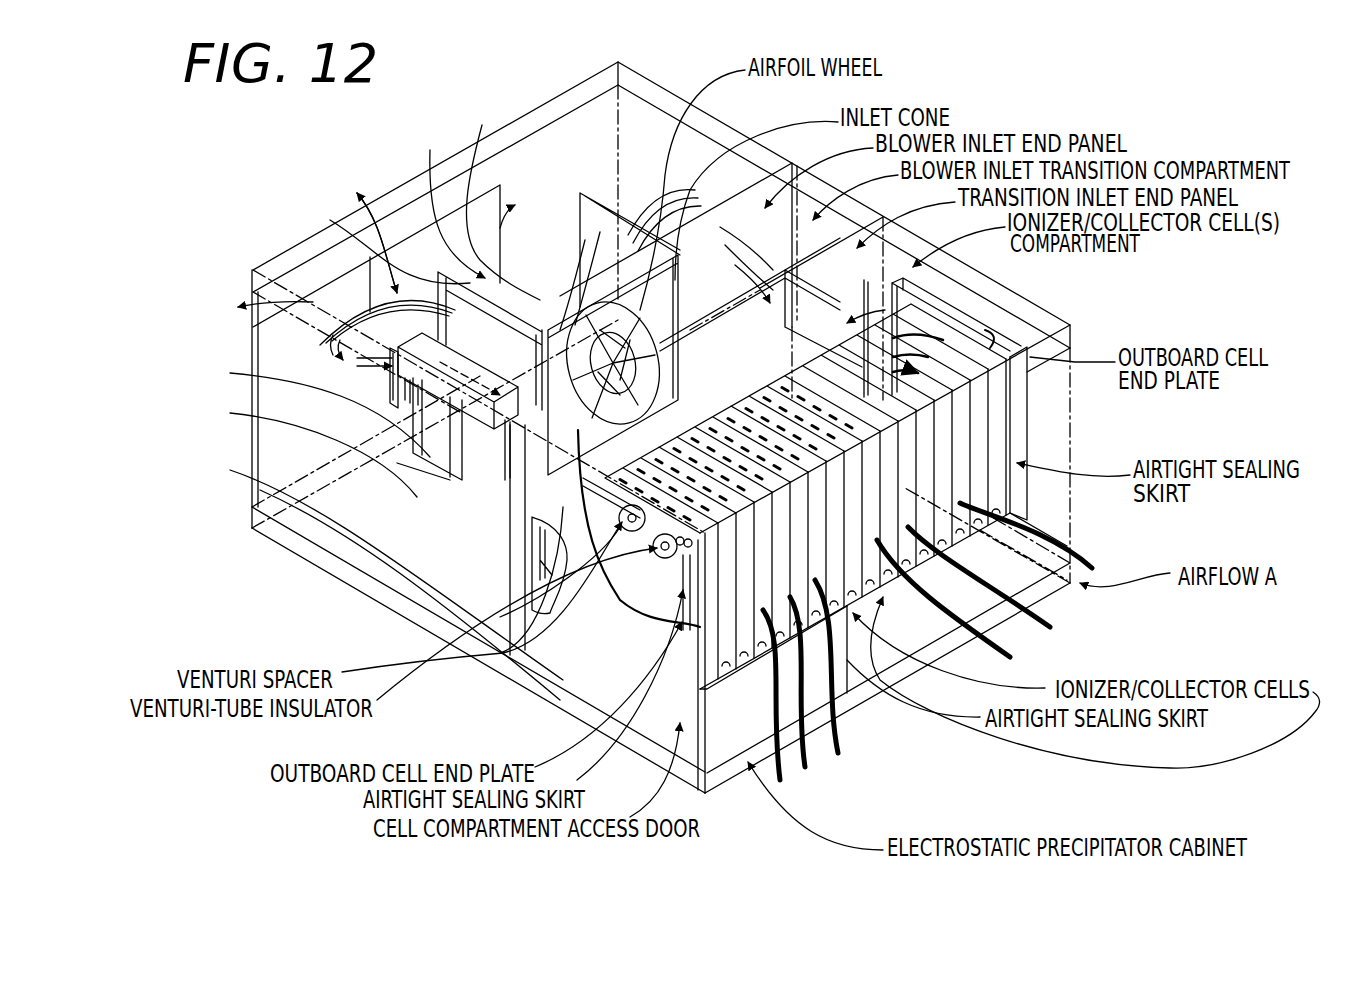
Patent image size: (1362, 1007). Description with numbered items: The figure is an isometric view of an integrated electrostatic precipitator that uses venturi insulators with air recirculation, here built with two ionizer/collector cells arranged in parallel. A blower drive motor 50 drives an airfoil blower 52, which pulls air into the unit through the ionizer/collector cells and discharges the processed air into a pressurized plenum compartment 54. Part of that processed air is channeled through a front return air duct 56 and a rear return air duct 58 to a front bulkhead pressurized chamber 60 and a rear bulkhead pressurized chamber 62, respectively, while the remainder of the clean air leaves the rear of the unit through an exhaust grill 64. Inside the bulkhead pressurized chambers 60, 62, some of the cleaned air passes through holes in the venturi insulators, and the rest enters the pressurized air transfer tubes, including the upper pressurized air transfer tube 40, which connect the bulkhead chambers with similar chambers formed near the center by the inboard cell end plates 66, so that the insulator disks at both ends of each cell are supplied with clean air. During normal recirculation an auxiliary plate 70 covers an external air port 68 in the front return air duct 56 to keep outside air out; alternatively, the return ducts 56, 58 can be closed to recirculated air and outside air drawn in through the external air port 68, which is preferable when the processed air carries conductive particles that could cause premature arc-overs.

The upper pressurized air transfer tube 40 is at (687, 570).
The blower drive motor 50 is at (515, 400).
The airfoil blower 52 is at (618, 300).
The pressurized plenum compartment 54 is at (640, 130).
The front return air duct 56 is at (420, 398).
The rear return air duct 58 is at (995, 345).
The front bulkhead pressurized chamber 60 is at (525, 600).
The rear bulkhead pressurized chamber 62 is at (927, 300).
The exhaust grill 64 is at (395, 278).
The inboard cell end plates 66 is at (1013, 425).
The external air port 68 is at (405, 385).
The auxiliary plate 70 is at (395, 360).